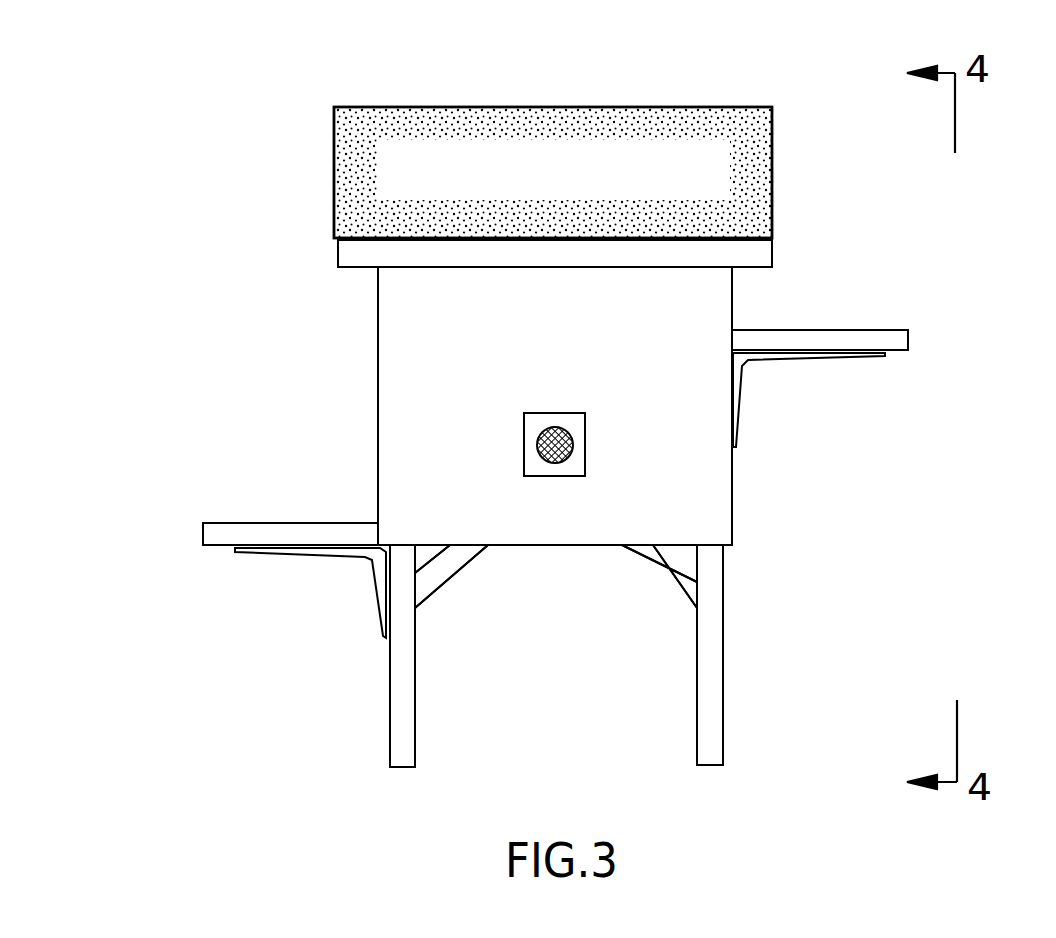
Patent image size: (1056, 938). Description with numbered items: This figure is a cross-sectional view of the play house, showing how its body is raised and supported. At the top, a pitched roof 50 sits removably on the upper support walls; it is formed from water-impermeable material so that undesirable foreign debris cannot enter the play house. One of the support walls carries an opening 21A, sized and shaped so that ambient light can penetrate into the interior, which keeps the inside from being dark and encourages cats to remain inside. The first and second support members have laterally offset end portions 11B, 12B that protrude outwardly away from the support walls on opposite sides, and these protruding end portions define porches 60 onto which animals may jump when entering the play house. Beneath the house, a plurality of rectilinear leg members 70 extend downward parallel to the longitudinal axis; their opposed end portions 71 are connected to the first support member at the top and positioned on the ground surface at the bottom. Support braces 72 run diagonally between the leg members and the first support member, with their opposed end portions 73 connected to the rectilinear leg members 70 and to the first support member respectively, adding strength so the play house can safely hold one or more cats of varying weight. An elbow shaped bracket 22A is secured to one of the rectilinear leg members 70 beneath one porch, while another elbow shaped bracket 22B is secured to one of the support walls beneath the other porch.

The pitched roof 50 is at (438, 107).
The porches 60 is at (812, 330).
The end portion of second support member 12B is at (908, 338).
The end portion of first support member 11B is at (203, 530).
The elbow shaped bracket 22B is at (748, 366).
The elbow shaped bracket 22A is at (372, 560).
The opening 21A is at (566, 442).
The rectilinear leg members 70 is at (390, 658).
The opposed end portions of leg members 71 is at (390, 767).
The support braces 72 is at (447, 583).
The opposed end portions of support braces 73 is at (490, 545).